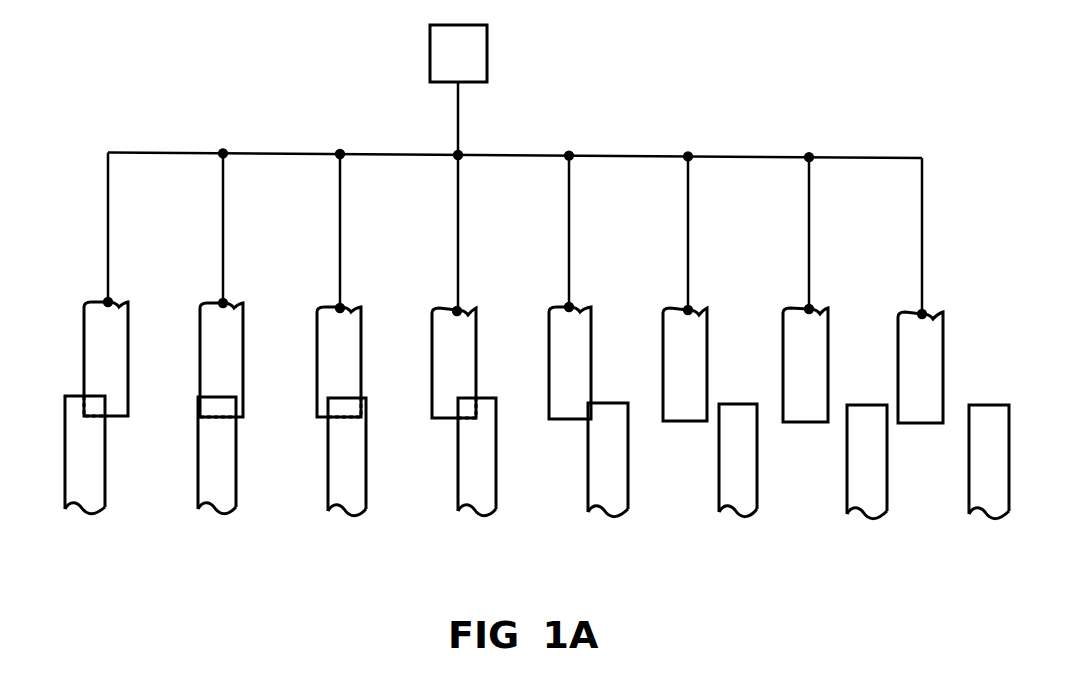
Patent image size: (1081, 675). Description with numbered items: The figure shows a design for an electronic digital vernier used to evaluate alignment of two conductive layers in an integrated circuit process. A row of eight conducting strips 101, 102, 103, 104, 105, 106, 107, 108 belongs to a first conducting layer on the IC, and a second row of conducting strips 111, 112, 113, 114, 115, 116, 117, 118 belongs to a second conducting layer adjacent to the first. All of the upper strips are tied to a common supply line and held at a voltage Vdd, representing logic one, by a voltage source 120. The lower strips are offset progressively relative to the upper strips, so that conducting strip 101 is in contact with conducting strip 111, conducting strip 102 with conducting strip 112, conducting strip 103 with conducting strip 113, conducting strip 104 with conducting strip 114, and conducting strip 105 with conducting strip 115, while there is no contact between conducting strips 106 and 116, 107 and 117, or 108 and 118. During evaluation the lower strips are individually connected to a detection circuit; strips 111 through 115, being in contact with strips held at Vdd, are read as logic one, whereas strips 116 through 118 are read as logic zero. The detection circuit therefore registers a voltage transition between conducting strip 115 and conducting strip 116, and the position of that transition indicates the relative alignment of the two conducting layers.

The voltage source 120 is at (487, 62).
The voltage Vdd is at (459, 150).
The conducting strip 101 is at (119, 307).
The conducting strip 102 is at (234, 308).
The conducting strip 103 is at (351, 312).
The conducting strip 104 is at (468, 315).
The conducting strip 105 is at (580, 312).
The conducting strip 106 is at (699, 315).
The conducting strip 107 is at (820, 314).
The conducting strip 108 is at (933, 319).
The conducting strip 111 is at (105, 507).
The conducting strip 112 is at (236, 507).
The conducting strip 113 is at (366, 509).
The conducting strip 114 is at (496, 509).
The conducting strip 115 is at (628, 509).
The conducting strip 116 is at (757, 509).
The conducting strip 117 is at (887, 511).
The conducting strip 118 is at (1009, 511).